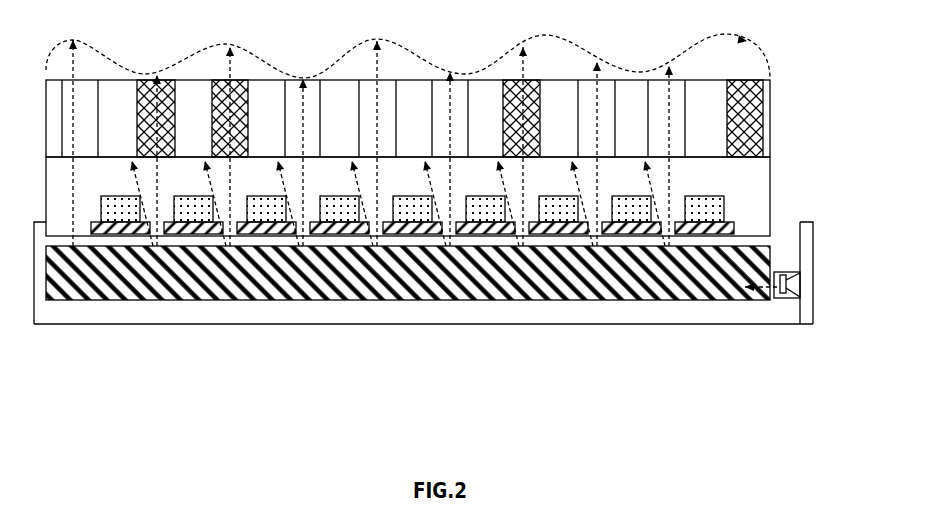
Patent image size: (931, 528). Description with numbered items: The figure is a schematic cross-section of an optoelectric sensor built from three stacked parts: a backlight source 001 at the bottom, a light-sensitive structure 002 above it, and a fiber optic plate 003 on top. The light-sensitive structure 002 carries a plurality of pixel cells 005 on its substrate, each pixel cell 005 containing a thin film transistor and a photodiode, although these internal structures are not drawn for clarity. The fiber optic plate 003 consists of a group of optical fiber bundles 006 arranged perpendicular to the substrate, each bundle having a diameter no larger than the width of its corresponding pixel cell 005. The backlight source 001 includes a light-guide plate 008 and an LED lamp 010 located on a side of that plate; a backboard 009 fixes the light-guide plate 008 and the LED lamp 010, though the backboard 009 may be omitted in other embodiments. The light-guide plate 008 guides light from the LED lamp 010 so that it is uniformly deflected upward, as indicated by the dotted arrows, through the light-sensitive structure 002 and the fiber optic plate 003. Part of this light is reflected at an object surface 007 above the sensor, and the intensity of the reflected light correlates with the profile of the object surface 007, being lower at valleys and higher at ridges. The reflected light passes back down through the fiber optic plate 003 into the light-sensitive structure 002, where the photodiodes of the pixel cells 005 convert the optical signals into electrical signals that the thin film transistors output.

The backlight source 001 is at (465, 214).
The light-sensitive structure 002 is at (812, 209).
The fiber optic plate 003 is at (456, 118).
The pixel cell 005 is at (715, 200).
The optical fiber bundle 006 is at (763, 92).
The object surface 007 is at (765, 50).
The light-guide plate 008 is at (578, 298).
The backboard 009 is at (467, 309).
The LED lamp 010 is at (790, 298).